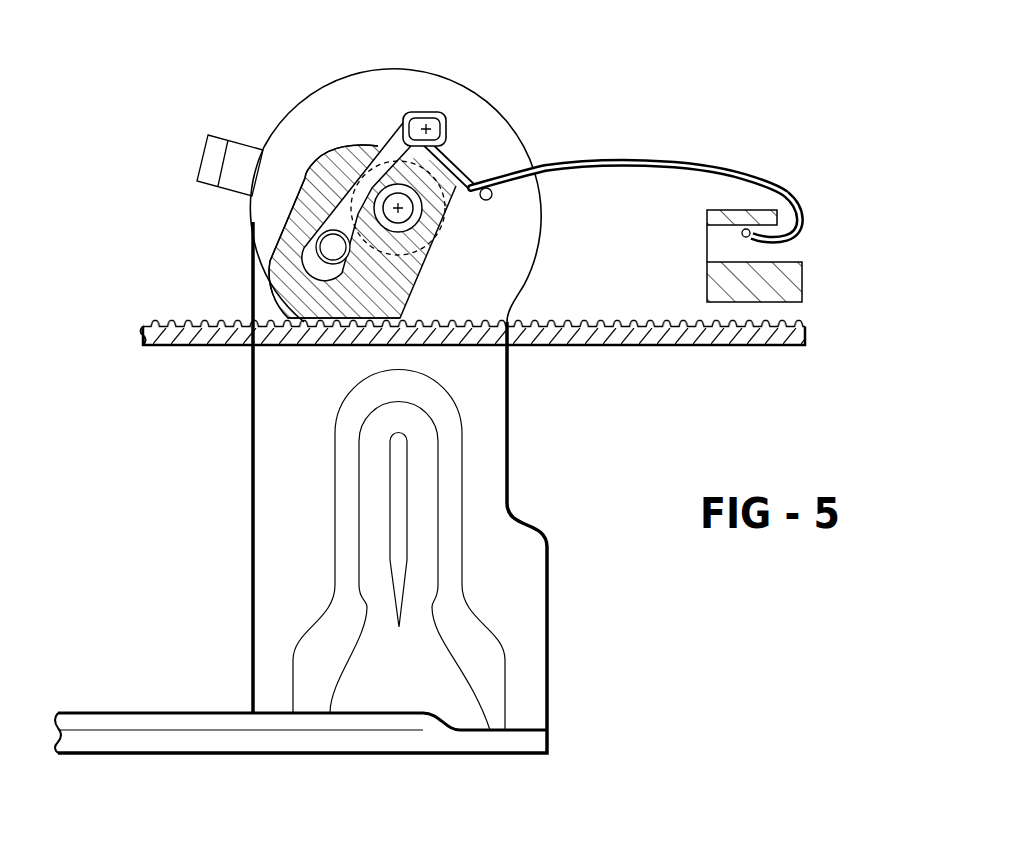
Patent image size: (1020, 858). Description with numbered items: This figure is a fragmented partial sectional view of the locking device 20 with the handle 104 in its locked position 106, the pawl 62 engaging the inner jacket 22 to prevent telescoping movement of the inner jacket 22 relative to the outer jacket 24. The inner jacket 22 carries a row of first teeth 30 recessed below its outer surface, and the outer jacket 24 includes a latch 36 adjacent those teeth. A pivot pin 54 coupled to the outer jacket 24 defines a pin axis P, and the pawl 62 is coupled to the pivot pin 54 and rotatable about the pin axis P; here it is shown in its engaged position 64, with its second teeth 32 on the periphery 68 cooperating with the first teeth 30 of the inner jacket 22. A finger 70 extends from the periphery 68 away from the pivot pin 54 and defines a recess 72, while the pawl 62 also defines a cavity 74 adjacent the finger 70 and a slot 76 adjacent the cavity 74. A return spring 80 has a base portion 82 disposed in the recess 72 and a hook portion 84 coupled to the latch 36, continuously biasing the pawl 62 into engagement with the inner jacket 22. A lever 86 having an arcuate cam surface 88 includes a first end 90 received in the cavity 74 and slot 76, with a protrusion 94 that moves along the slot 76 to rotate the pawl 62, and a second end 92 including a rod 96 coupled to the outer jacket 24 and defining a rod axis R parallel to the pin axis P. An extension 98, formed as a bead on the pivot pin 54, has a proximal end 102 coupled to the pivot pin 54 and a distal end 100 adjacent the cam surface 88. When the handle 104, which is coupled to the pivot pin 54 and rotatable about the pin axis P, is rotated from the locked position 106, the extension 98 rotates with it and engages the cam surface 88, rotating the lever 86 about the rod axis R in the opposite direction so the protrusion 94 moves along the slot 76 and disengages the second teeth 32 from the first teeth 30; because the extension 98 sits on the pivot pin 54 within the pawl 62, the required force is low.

The locking device 20 is at (161, 141).
The inner jacket 22 is at (680, 337).
The outer jacket 24 is at (790, 280).
The first teeth 30 is at (677, 321).
The second teeth 32 is at (357, 343).
The latch 36 is at (742, 222).
The pivot pin 54 is at (440, 242).
The pawl 62 is at (262, 146).
The engaged position 64 is at (222, 317).
The periphery 68 is at (279, 240).
The finger 70 is at (478, 178).
The recess 72 is at (468, 184).
The cavity 74 is at (354, 155).
The slot 76 is at (378, 148).
The return spring 80 is at (697, 166).
The base portion 82 is at (493, 194).
The hook portion 84 is at (800, 216).
The lever 86 is at (298, 192).
The cam surface 88 is at (313, 183).
The first end 90 is at (332, 252).
The second end 92 is at (423, 111).
The protrusion 94 is at (283, 324).
The rod 96 is at (446, 116).
The extension 98 is at (393, 175).
The distal end 100 is at (455, 162).
The proximal end 102 is at (425, 236).
The handle 104 is at (540, 660).
The locked position 106 is at (183, 647).
The pin axis P is at (402, 214).
The rod axis R is at (434, 118).